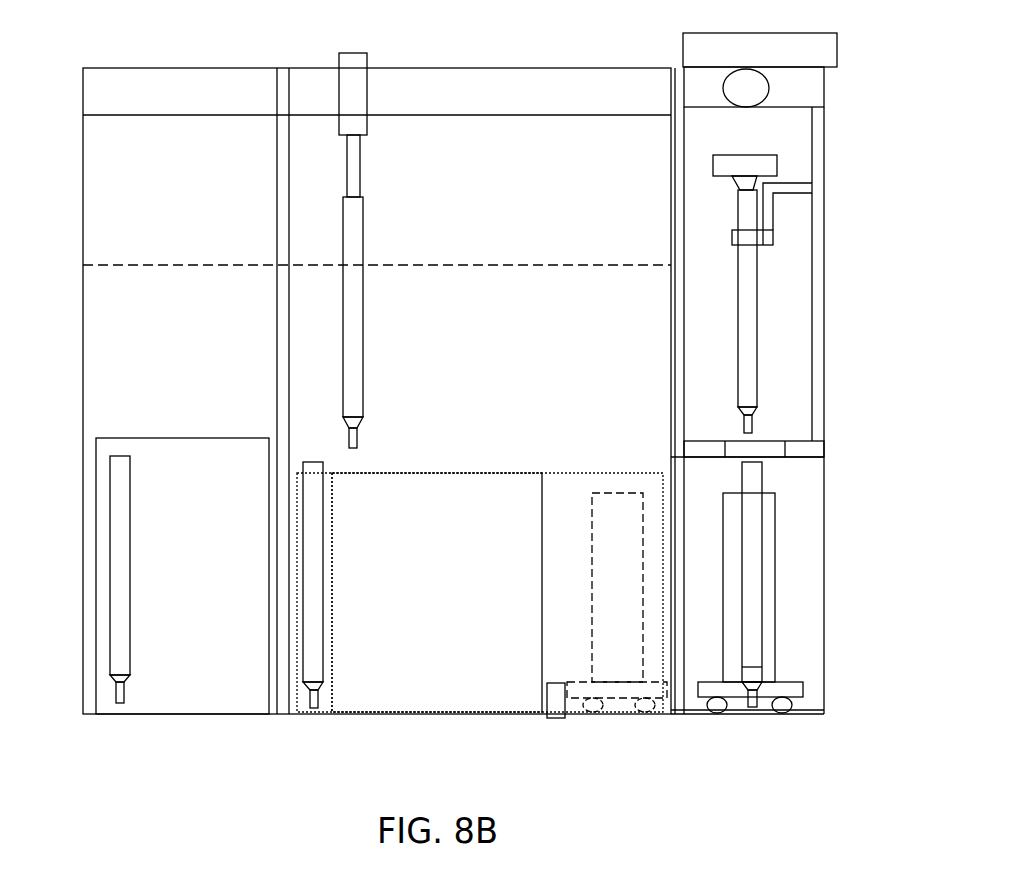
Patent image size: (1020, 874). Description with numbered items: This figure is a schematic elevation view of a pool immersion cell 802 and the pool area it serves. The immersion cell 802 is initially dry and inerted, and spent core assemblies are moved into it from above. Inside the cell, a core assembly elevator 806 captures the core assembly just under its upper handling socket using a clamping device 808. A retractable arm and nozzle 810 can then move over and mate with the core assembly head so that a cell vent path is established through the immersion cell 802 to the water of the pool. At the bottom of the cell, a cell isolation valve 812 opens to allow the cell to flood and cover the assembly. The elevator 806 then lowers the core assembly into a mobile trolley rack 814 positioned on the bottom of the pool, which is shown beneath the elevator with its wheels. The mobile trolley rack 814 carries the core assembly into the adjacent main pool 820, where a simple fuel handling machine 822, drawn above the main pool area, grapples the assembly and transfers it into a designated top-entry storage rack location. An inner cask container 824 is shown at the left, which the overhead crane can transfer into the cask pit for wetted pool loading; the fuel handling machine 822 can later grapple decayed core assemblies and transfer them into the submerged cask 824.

The pool immersion cell 802 is at (802, 292).
The core assembly elevator 806 is at (812, 185).
The clamping device 808 is at (761, 233).
The retractable arm and nozzle 810 is at (784, 160).
The cell isolation valve 812 is at (783, 438).
The mobile trolley rack 814 is at (795, 684).
The main pool 820 is at (453, 606).
The simple fuel handling machine 822 is at (376, 154).
The inner cask container 824 is at (120, 421).